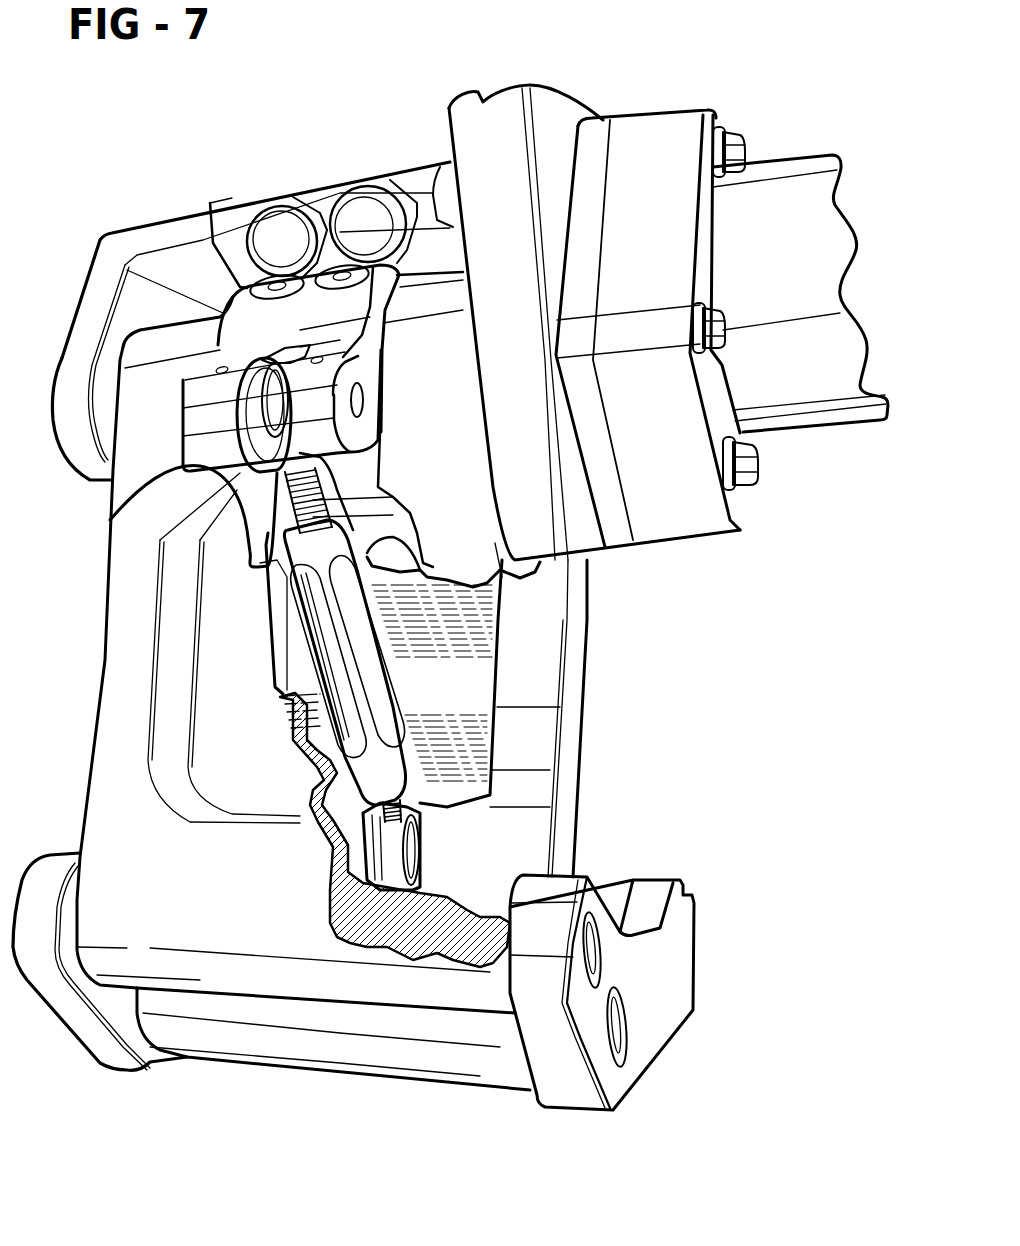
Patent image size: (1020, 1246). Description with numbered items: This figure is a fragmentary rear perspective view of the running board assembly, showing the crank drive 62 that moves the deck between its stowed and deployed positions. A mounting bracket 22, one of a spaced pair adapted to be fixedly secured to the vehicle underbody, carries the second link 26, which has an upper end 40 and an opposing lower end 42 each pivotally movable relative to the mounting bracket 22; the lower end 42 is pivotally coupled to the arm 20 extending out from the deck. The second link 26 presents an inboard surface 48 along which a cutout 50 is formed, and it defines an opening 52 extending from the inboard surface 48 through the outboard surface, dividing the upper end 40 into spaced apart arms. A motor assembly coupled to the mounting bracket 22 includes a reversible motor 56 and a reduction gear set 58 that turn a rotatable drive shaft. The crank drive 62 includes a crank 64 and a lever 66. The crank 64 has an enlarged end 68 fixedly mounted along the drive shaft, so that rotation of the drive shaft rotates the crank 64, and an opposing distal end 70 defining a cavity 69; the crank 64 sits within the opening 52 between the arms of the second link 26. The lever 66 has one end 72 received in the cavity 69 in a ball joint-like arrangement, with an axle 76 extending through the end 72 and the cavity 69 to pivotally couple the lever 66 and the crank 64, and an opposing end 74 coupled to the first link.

The arm 20 is at (670, 978).
The mounting bracket 22 is at (97, 248).
The second link 26 is at (100, 648).
The upper end 40 is at (137, 383).
The lower end 42 is at (100, 928).
The inboard surface 48 is at (230, 890).
The cutout 50 is at (158, 692).
The opening 52 is at (290, 613).
The reversible motor 56 is at (788, 430).
The reduction gear set 58 is at (687, 520).
The crank drive 62 is at (246, 487).
The crank 64 is at (240, 313).
The lever 66 is at (387, 672).
The enlarged end 68 is at (247, 290).
The cavity 69 is at (287, 357).
The distal end 70 is at (110, 519).
The end 72 is at (258, 420).
The opposing end 74 is at (337, 892).
The axle 76 is at (363, 400).